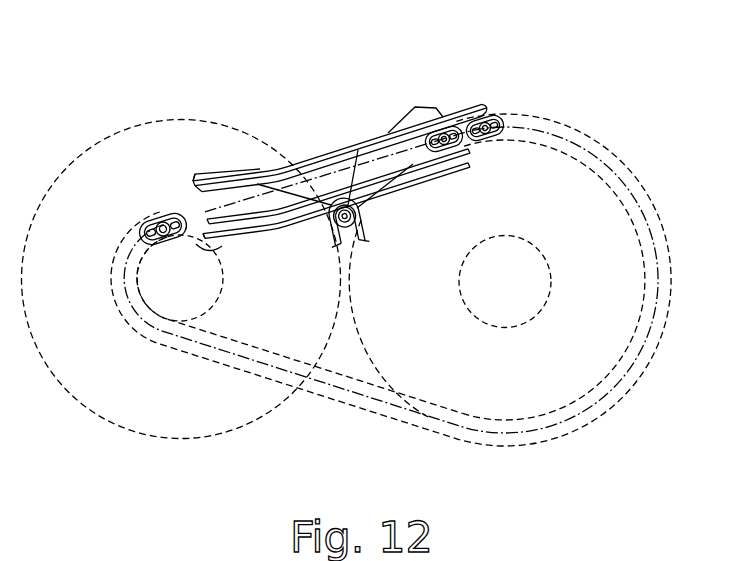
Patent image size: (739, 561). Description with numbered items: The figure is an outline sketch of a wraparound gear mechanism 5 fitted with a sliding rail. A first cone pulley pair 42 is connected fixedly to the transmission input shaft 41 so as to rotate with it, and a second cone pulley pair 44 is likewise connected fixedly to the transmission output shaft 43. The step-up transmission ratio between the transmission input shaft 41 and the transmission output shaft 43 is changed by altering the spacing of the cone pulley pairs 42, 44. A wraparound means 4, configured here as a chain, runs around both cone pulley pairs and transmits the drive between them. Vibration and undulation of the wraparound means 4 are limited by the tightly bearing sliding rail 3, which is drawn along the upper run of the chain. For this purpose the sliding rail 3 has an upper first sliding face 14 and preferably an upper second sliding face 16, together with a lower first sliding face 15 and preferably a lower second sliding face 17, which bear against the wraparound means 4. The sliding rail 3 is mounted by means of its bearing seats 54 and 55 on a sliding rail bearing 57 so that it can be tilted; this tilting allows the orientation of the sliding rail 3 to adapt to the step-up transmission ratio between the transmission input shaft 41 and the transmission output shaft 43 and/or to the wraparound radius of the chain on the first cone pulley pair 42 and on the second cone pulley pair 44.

The wraparound gear mechanism 5 is at (116, 62).
The sliding rail 3 is at (466, 105).
The wraparound means 4 is at (330, 397).
The upper first sliding face 14 is at (252, 150).
The upper second sliding face 16 is at (204, 236).
The lower first sliding face 15 is at (358, 150).
The lower second sliding face 17 is at (194, 177).
The transmission input shaft 41 is at (503, 235).
The first cone pulley pair 42 is at (597, 193).
The transmission output shaft 43 is at (143, 310).
The second cone pulley pair 44 is at (118, 136).
The bearing seat 54 is at (360, 216).
The bearing seat 55 is at (345, 216).
The sliding rail bearing 57 is at (345, 247).